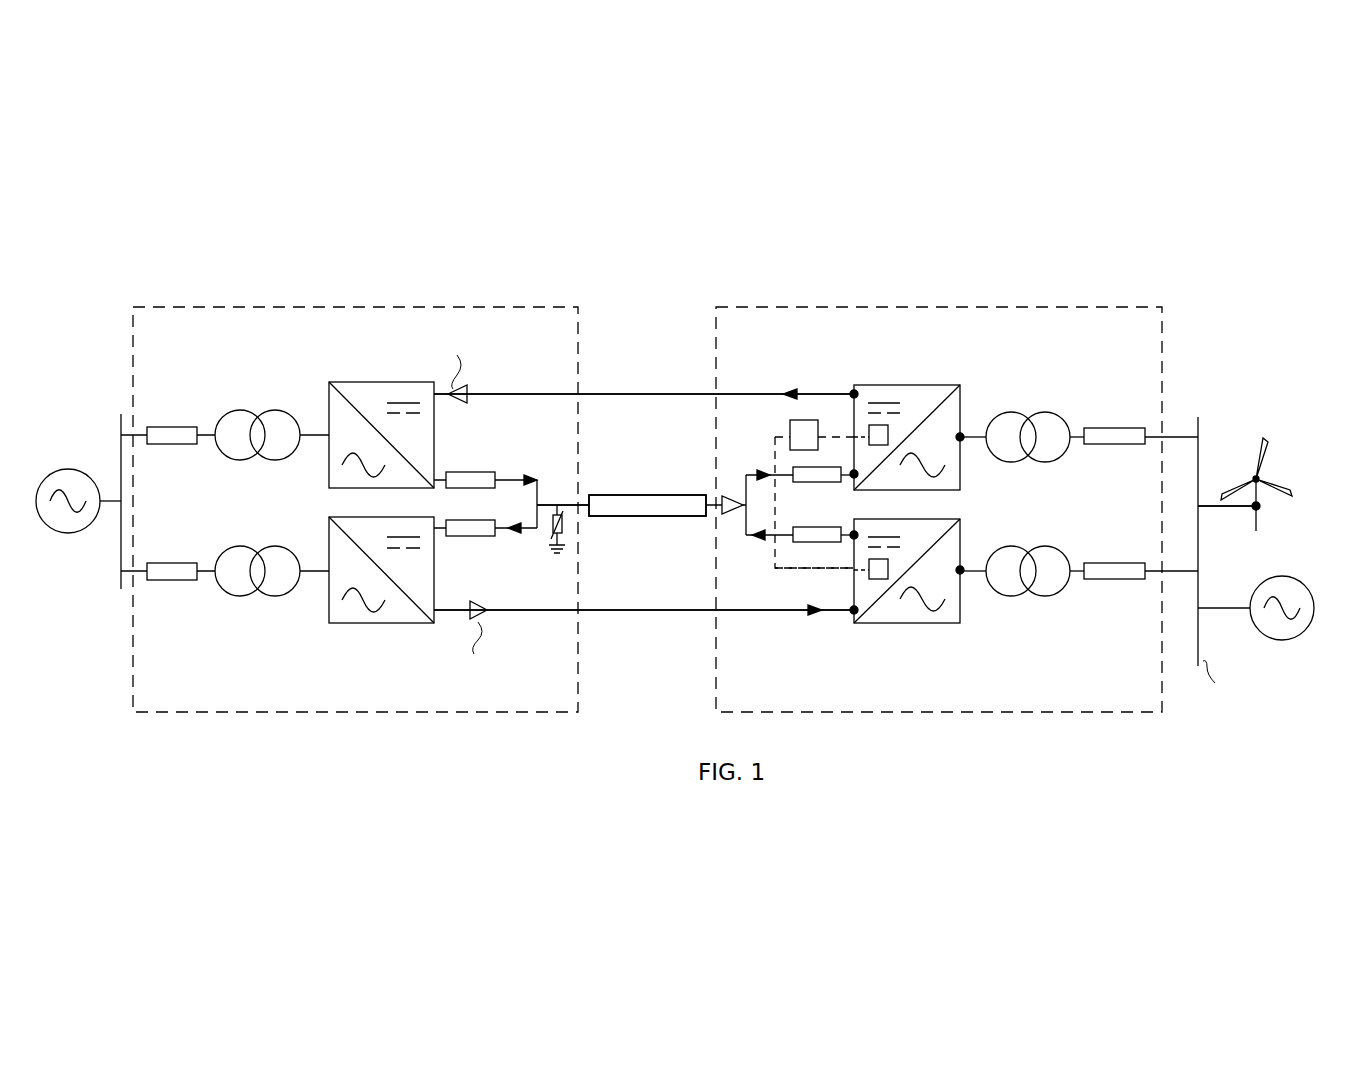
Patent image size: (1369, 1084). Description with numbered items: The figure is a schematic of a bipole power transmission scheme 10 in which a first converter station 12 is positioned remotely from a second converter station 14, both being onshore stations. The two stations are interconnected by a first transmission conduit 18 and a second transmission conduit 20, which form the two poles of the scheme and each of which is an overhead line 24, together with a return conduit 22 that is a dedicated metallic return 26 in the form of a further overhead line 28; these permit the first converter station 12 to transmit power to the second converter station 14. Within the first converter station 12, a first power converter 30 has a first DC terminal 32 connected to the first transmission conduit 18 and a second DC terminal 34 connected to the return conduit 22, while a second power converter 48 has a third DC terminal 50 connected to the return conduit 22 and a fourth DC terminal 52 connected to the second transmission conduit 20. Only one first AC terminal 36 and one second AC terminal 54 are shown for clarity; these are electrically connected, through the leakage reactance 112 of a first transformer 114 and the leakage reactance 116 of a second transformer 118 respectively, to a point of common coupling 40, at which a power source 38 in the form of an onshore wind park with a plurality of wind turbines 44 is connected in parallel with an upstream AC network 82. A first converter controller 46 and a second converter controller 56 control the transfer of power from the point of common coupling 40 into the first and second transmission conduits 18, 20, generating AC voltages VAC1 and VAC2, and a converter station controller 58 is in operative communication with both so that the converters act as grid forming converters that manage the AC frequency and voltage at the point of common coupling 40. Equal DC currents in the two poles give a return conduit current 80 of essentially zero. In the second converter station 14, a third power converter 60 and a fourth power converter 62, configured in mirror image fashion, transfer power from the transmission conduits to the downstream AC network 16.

The bipole power transmission scheme 10 is at (975, 266).
The first converter station 12 is at (1165, 342).
The second converter station 14 is at (132, 344).
The downstream AC network 16 is at (65, 468).
The first transmission conduit 18 is at (654, 392).
The second transmission conduit 20 is at (660, 612).
The return conduit 22 is at (648, 492).
The overhead line 24 is at (643, 502).
The dedicated metallic return 26 is at (647, 505).
The further overhead line 28 is at (629, 505).
The first power converter 30 is at (917, 405).
The first DC terminal 32 is at (852, 392).
The second DC terminal 34 is at (850, 480).
The first AC terminal 36 is at (961, 434).
The power source 38 is at (1262, 508).
The point of common coupling 40 is at (1204, 442).
The wind turbine 44 is at (1273, 454).
The first converter controller 46 is at (890, 432).
The second power converter 48 is at (930, 588).
The third DC terminal 50 is at (860, 518).
The fourth DC terminal 52 is at (852, 614).
The second AC terminal 54 is at (962, 576).
The second converter controller 56 is at (852, 587).
The converter station controller 58 is at (812, 418).
The third power converter 60 is at (353, 380).
The fourth power converter 62 is at (362, 626).
The return conduit current 80 is at (738, 522).
The upstream AC network 82 is at (1281, 640).
The leakage reactance 112 is at (1111, 446).
The first transformer 114 is at (1046, 412).
The leakage reactance 116 is at (1111, 580).
The second transformer 118 is at (1043, 598).